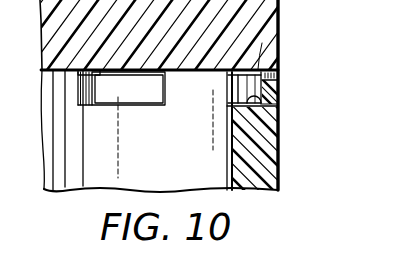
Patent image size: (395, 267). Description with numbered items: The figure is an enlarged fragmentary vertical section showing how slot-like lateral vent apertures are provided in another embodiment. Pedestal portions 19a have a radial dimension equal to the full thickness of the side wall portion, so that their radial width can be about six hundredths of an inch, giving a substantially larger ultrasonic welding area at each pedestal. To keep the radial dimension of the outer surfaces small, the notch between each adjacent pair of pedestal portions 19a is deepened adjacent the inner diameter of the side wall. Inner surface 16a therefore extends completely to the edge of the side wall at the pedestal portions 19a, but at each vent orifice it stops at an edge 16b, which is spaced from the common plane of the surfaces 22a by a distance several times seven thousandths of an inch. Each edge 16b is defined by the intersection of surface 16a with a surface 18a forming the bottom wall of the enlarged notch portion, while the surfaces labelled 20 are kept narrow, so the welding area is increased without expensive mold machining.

The surfaces 22a is at (262, 43).
The retaining ring 20 is at (278, 92).
The surface 18a is at (280, 110).
The pedestal portions 19a is at (192, 93).
The edge 16b is at (230, 111).
The inner surface 16a is at (228, 159).